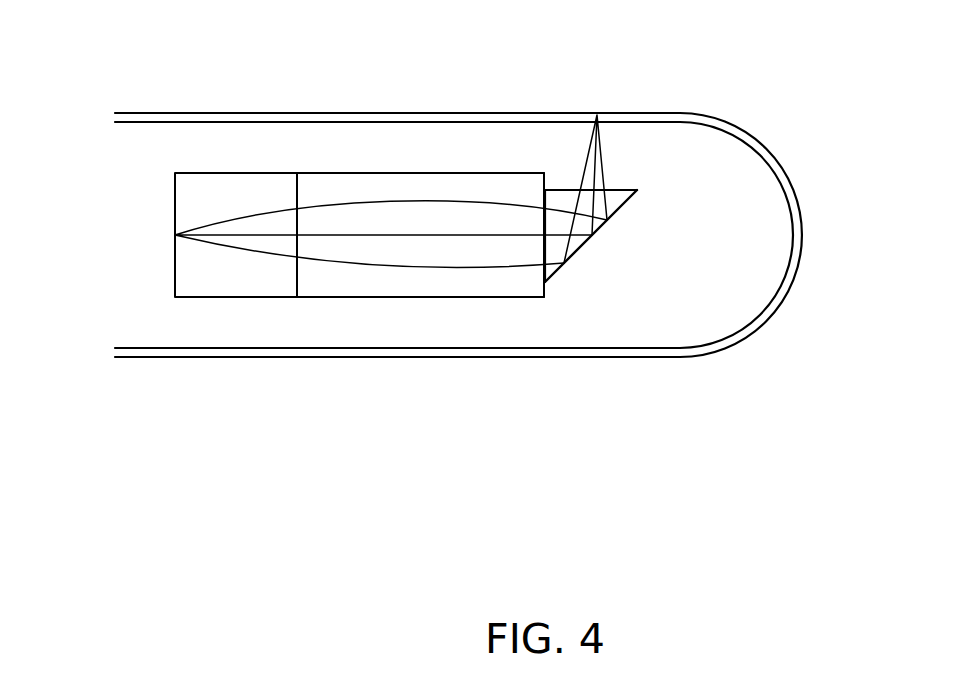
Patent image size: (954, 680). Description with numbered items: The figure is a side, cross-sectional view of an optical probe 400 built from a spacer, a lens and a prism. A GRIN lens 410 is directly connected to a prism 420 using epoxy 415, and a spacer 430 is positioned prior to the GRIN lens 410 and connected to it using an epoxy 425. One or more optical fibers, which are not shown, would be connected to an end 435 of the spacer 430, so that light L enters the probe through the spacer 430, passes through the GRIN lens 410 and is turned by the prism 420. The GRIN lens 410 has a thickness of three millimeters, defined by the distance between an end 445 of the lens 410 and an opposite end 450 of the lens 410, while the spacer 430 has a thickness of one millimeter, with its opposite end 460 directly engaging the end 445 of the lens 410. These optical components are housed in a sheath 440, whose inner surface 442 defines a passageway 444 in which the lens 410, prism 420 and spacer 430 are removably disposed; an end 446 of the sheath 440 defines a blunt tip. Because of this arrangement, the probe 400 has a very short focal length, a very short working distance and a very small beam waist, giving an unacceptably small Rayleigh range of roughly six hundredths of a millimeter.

The optical probe 400 is at (469, 244).
The GRIN lens 410 is at (374, 257).
The epoxy 415 is at (717, 307).
The prism 420 is at (617, 210).
The epoxy 425 is at (297, 173).
The spacer 430 is at (190, 297).
The end of spacer 435 is at (175, 235).
The sheath 440 is at (505, 194).
The inner surface 442 is at (630, 122).
The passageway 444 is at (688, 160).
The end of sheath 446 is at (780, 305).
The end of lens 445 is at (293, 285).
The opposite end of lens 450 is at (545, 297).
The opposite end of spacer 460 is at (298, 245).
The light beam L is at (587, 152).